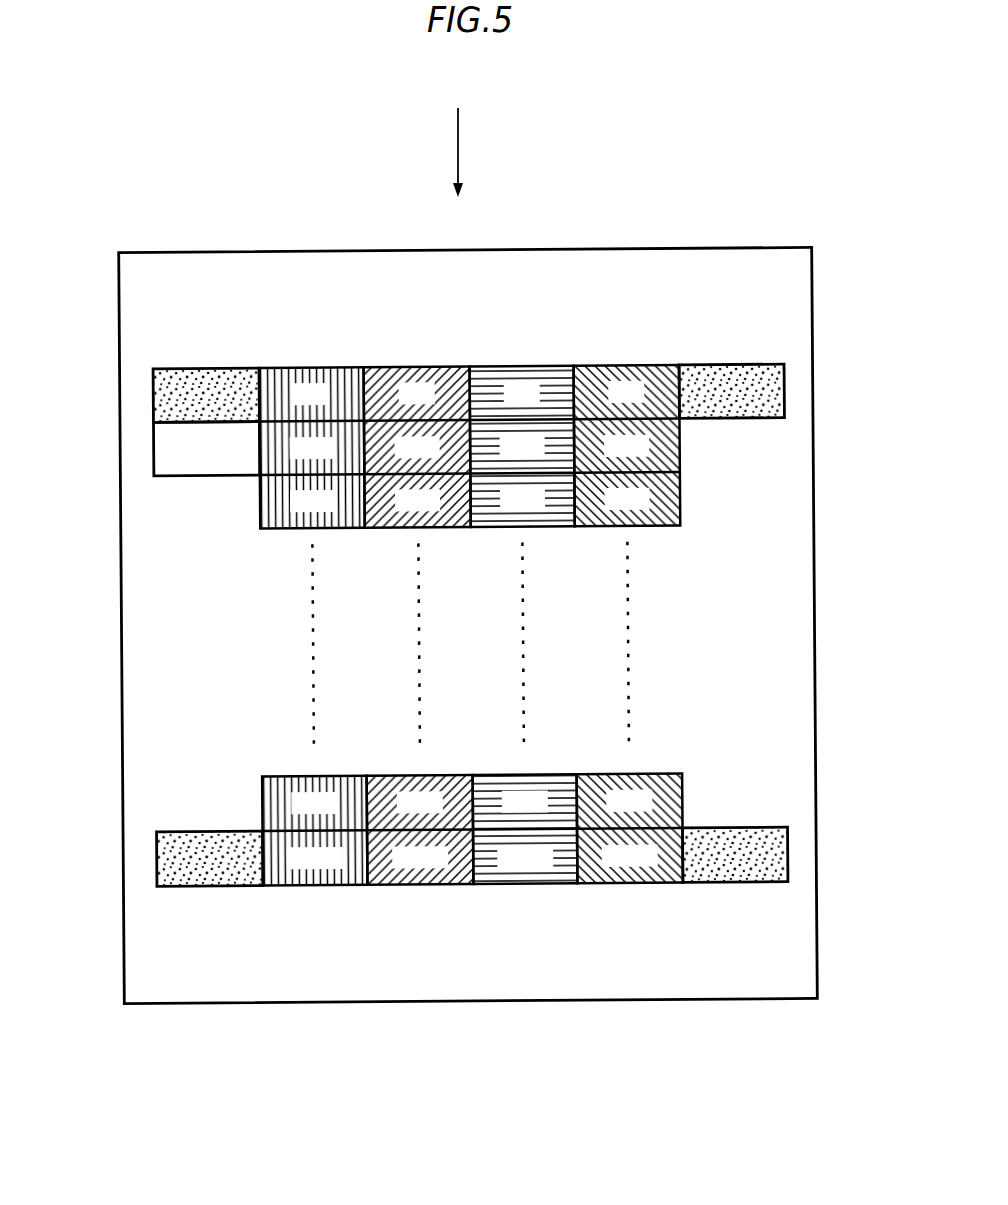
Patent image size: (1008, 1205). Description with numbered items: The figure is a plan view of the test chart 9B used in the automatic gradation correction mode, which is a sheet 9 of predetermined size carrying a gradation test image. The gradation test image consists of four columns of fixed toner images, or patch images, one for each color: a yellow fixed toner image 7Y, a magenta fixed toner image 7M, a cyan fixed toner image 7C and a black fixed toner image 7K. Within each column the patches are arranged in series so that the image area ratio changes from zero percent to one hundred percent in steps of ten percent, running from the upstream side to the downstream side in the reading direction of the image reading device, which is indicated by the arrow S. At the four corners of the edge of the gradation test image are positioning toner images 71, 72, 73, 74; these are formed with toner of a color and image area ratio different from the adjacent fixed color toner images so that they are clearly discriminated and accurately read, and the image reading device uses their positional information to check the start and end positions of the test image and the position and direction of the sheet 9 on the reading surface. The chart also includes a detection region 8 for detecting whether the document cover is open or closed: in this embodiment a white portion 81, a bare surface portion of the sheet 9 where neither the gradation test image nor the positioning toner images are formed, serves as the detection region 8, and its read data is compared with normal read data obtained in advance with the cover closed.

The sheet 9 is at (468, 574).
The test chart 9B is at (629, 248).
The reading direction arrow S is at (457, 143).
The positioning toner image 71 is at (157, 398).
The positioning toner image 72 is at (775, 392).
The positioning toner image 73 is at (158, 860).
The positioning toner image 74 is at (778, 860).
The detection region 8 is at (146, 449).
The white portion 81 is at (160, 457).
The yellow fixed toner image 7Y is at (315, 897).
The magenta fixed toner image 7M is at (421, 897).
The cyan fixed toner image 7C is at (524, 897).
The black fixed toner image 7K is at (629, 897).